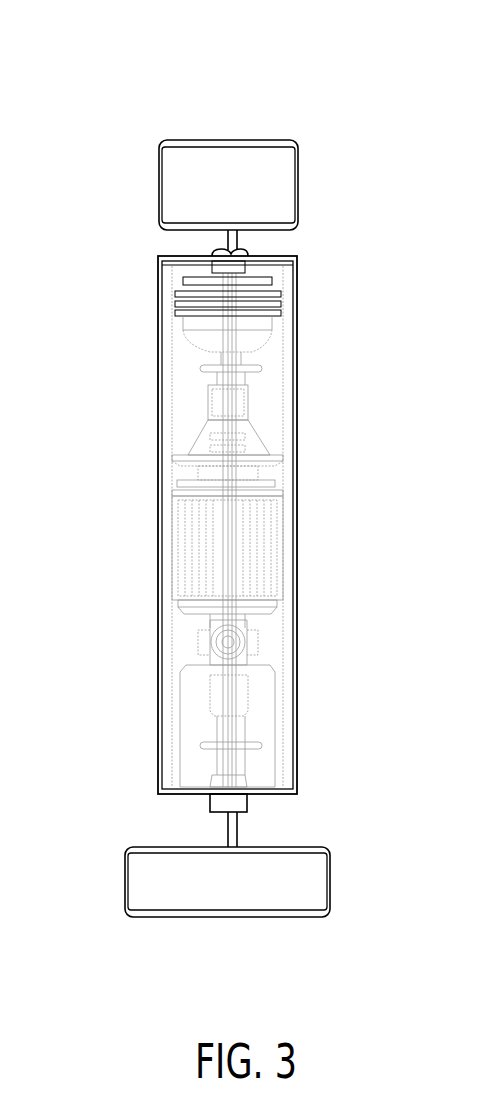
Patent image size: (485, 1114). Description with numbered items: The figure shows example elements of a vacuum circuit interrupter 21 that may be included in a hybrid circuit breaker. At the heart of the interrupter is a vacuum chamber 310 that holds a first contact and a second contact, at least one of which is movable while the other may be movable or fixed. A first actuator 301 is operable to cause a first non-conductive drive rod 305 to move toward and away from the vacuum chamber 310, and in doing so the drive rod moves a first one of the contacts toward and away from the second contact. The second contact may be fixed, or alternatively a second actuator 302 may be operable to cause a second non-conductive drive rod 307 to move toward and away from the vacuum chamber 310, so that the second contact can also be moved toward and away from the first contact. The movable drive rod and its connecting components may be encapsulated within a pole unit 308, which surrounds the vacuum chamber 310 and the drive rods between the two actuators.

The vacuum circuit interrupter 21 is at (140, 82).
The first actuator 301 is at (285, 877).
The second actuator 302 is at (298, 181).
The first non-conductive drive rod 305 is at (238, 714).
The second non-conductive drive rod 307 is at (272, 315).
The pole unit 308 is at (298, 451).
The vacuum chamber 310 is at (250, 562).